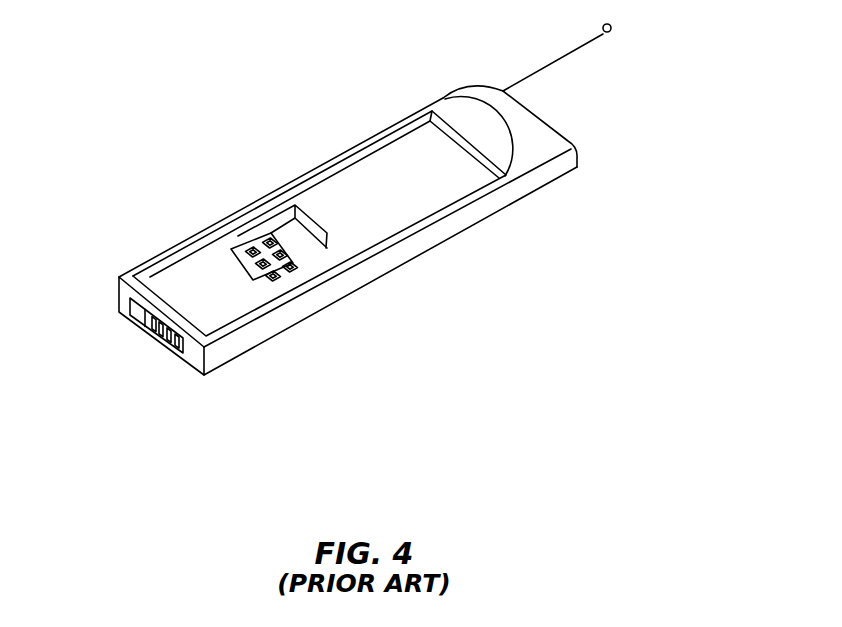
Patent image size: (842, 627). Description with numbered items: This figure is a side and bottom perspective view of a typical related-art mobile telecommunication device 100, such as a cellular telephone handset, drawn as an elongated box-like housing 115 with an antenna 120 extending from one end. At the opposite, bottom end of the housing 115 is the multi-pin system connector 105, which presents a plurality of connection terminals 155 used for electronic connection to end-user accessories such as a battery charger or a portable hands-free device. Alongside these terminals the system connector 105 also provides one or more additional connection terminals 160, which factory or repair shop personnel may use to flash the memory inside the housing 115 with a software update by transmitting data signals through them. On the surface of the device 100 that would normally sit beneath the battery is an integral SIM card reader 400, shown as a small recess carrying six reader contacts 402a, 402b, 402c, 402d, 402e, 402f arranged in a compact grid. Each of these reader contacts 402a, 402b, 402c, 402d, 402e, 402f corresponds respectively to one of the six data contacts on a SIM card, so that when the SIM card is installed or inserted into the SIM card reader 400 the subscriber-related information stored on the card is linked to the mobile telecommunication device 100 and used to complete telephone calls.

The mobile telecommunication device 100 is at (668, 136).
The system connector 105 is at (136, 338).
The housing 115 is at (535, 182).
The antenna 120 is at (555, 61).
The connection terminals 155 is at (165, 340).
The additional connection terminals 160 is at (125, 315).
The SIM card reader 400 is at (312, 238).
The reader contact 402a is at (288, 262).
The reader contact 402b is at (278, 243).
The reader contact 402c is at (251, 249).
The reader contact 402d is at (256, 262).
The reader contact 402e is at (266, 282).
The reader contact 402f is at (282, 280).